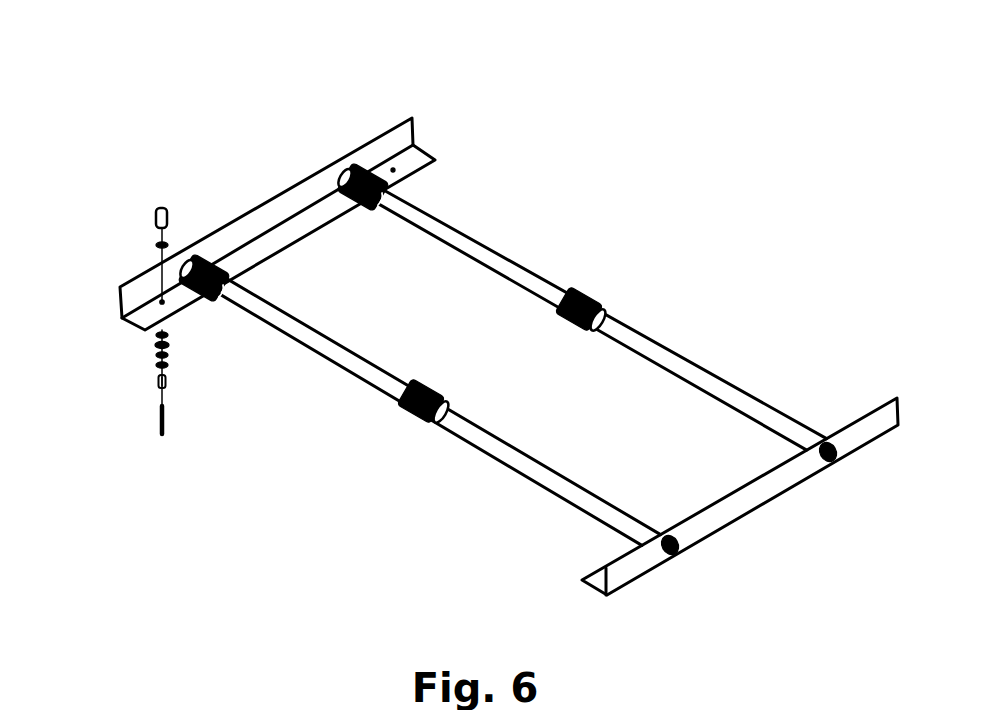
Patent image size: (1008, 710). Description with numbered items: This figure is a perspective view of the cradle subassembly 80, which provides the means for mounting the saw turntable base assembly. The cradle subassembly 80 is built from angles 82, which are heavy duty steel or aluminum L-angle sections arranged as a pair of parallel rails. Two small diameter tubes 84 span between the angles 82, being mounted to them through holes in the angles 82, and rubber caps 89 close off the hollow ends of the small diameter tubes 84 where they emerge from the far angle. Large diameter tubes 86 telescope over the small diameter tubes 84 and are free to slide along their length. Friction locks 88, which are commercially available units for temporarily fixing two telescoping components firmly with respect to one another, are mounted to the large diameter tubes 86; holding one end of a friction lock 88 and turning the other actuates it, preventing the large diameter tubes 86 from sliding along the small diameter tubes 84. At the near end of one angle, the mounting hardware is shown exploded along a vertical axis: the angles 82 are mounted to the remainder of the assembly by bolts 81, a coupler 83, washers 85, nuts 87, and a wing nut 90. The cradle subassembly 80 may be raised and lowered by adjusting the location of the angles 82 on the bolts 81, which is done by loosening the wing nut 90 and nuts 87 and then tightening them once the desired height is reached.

The cradle subassembly 80 is at (481, 333).
The bolts 81 is at (159, 430).
The angles 82 is at (292, 184).
The coupler 83 is at (167, 383).
The small diameter tubes 84 is at (591, 259).
The washers 85 is at (157, 356).
The large diameter tubes 86 is at (463, 228).
The nuts 87 is at (157, 245).
The friction locks 88 is at (420, 423).
The rubber caps 89 is at (678, 553).
The wing nut 90 is at (156, 217).